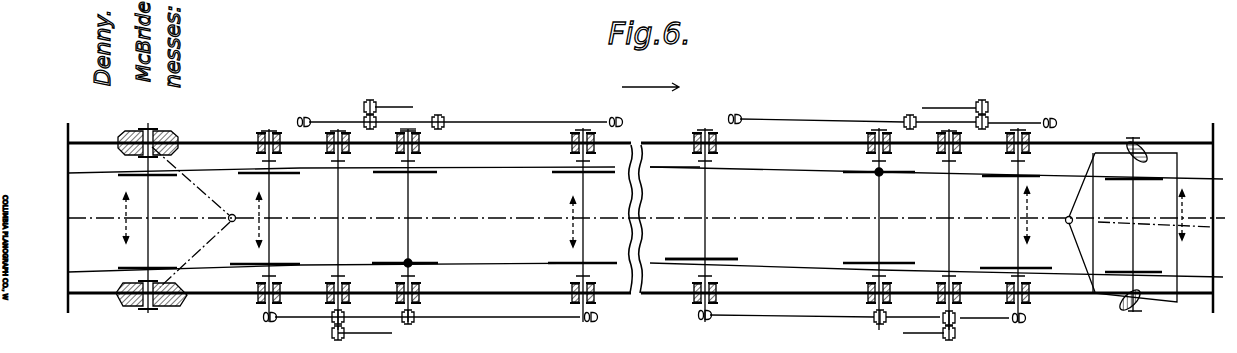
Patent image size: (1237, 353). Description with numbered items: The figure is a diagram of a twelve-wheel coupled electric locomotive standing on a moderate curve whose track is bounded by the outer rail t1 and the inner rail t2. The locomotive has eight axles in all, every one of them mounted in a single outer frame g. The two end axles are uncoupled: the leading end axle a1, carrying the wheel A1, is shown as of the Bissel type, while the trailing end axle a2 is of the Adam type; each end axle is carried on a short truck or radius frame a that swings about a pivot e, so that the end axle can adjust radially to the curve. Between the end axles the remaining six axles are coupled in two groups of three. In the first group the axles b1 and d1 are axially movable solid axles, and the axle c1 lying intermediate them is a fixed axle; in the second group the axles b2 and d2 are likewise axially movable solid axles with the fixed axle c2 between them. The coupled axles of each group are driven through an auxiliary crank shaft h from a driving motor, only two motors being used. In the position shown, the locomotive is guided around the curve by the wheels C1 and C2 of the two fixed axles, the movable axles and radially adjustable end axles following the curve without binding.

The outer frame g is at (93, 142).
The pivot e is at (231, 214).
The end axle a2 is at (150, 239).
The axially movable solid axle d2 is at (272, 243).
The auxiliary crank shaft h is at (341, 203).
The fixed axle c2 is at (410, 237).
The wheel C2 is at (413, 268).
The axially movable solid axle b2 is at (586, 242).
The outer rail t1 is at (675, 185).
The axially movable solid axle b1 is at (705, 243).
The inner rail t2 is at (719, 250).
The wheel C1 is at (850, 176).
The fixed axle c1 is at (878, 197).
The axially movable solid axle d1 is at (1014, 247).
The truck or radius frame a is at (1078, 196).
The wheel A1 is at (1157, 180).
The end axle a1 is at (1138, 248).